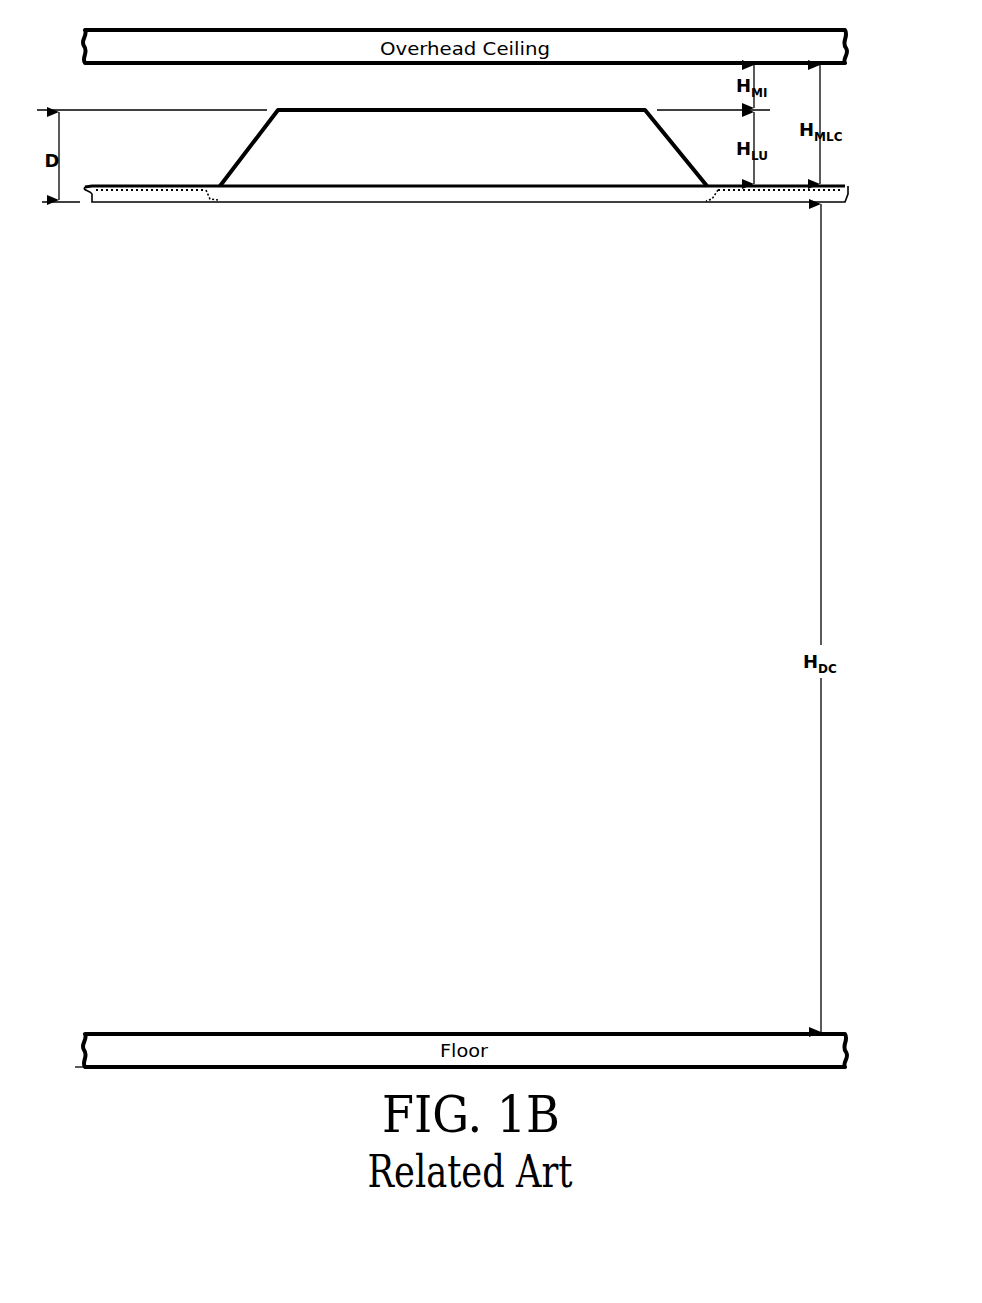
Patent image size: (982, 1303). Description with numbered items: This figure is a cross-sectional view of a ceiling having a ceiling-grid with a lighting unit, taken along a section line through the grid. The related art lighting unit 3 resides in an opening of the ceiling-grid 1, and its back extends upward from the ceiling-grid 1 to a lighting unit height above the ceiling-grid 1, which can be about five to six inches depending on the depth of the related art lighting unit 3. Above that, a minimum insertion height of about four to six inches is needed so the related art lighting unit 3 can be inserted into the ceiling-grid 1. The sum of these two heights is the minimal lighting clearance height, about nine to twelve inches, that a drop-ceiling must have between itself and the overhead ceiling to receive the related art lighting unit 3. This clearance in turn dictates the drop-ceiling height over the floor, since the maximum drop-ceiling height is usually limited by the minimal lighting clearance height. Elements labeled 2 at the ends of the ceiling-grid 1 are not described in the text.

The ceiling-grid 1 is at (303, 195).
The lamp 2 is at (152, 195).
The related art lighting unit 3 is at (470, 160).